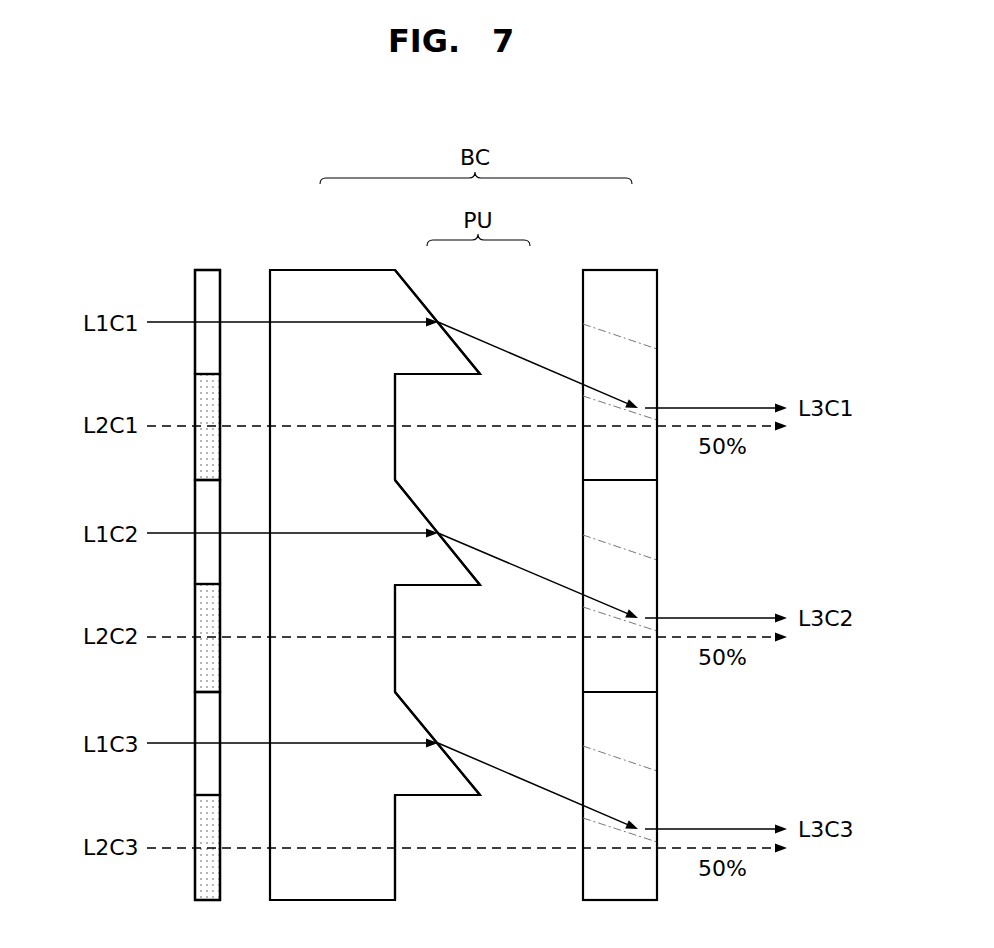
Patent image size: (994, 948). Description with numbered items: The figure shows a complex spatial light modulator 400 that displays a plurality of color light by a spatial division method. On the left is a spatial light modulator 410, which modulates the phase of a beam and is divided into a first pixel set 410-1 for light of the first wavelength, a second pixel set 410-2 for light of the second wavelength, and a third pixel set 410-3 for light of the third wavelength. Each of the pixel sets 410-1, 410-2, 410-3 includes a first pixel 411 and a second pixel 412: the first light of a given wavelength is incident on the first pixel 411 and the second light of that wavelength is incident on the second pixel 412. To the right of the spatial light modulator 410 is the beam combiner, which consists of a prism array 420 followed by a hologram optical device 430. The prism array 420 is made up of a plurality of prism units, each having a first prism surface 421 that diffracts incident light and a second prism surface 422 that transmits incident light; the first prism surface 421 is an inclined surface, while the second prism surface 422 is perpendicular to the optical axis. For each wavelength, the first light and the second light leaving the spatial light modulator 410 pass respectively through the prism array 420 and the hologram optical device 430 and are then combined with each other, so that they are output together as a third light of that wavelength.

The complex spatial light modulator 400 is at (742, 221).
The spatial light modulator 410 is at (208, 268).
The first pixel set 410-1 is at (98, 347).
The second pixel set 410-2 is at (98, 558).
The third pixel set 410-3 is at (98, 768).
The first pixel 411 is at (200, 347).
The second pixel 412 is at (200, 399).
The prism array 420 is at (332, 268).
The first prism surface 421 is at (420, 297).
The second prism surface 422 is at (395, 407).
The hologram optical device 430 is at (620, 268).